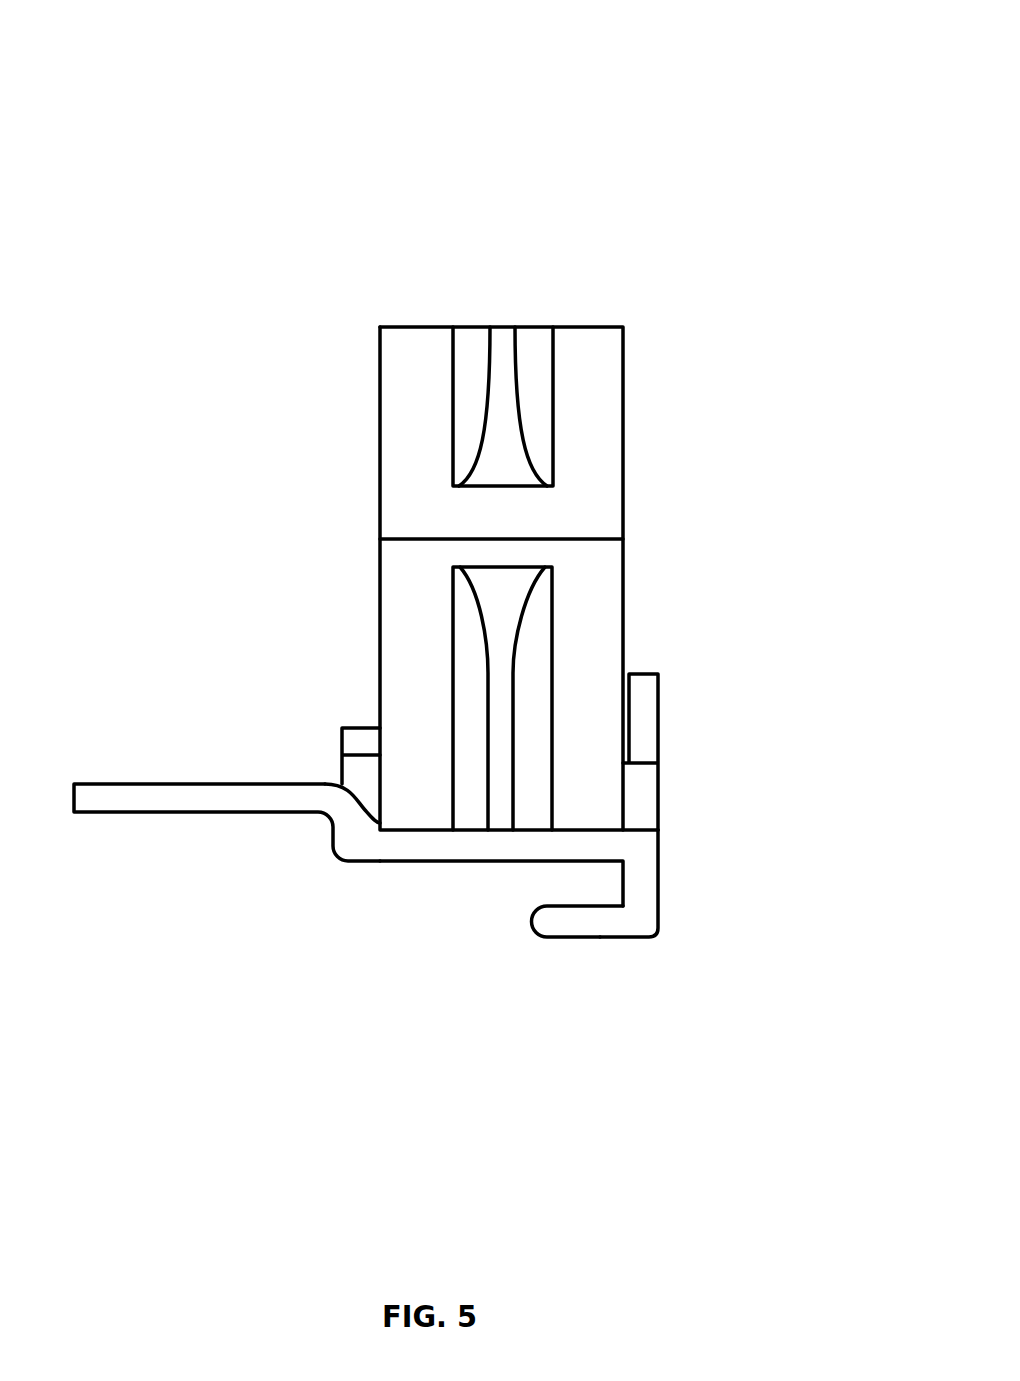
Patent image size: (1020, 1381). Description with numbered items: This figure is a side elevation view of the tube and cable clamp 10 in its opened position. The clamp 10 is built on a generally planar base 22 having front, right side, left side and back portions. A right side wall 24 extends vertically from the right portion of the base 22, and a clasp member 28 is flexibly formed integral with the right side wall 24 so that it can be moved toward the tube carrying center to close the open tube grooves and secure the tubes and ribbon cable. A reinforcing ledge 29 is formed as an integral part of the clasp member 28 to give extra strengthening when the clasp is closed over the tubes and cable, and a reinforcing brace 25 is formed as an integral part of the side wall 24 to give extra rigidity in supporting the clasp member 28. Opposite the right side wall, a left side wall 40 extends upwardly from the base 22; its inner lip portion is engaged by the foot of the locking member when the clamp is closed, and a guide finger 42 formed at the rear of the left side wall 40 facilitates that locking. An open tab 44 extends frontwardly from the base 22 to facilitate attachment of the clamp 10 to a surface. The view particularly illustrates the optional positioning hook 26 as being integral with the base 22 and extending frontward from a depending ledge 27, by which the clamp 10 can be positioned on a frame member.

The tube and cable clamp 10 is at (712, 234).
The base 22 is at (528, 863).
The right side wall 24 is at (397, 656).
The reinforcing brace 25 is at (498, 782).
The positioning hook 26 is at (567, 923).
The depending ledge 27 is at (660, 898).
The clasp member 28 is at (608, 423).
The reinforcing ledge 29 is at (499, 375).
The left side wall 40 is at (352, 776).
The guide finger 42 is at (647, 712).
The open tab 44 is at (203, 805).